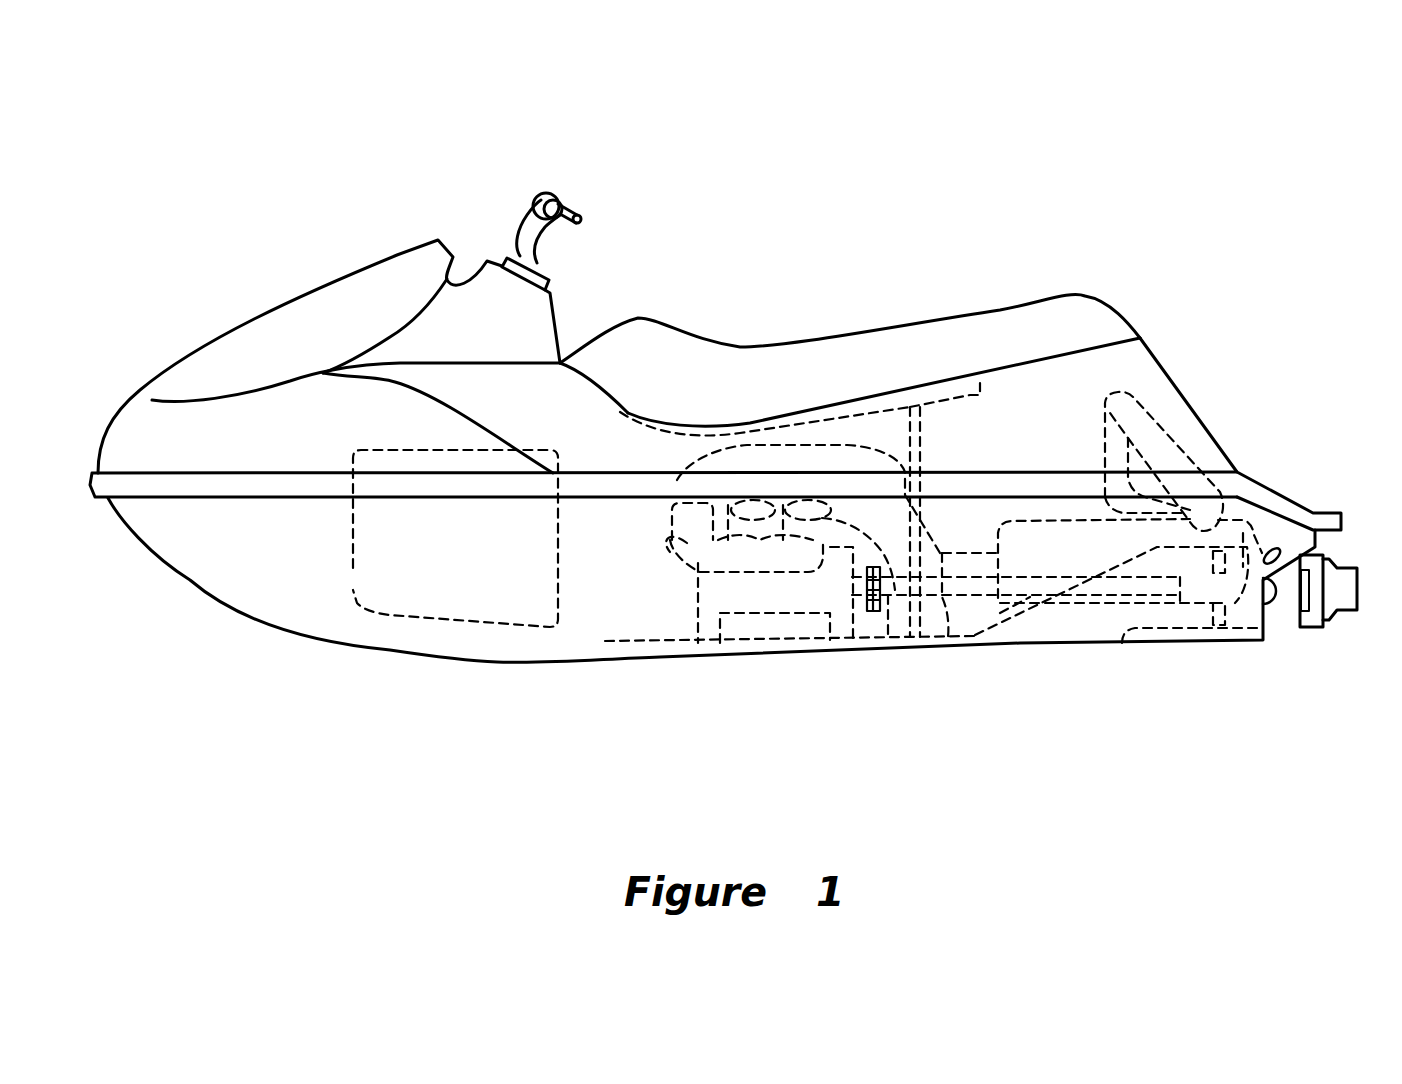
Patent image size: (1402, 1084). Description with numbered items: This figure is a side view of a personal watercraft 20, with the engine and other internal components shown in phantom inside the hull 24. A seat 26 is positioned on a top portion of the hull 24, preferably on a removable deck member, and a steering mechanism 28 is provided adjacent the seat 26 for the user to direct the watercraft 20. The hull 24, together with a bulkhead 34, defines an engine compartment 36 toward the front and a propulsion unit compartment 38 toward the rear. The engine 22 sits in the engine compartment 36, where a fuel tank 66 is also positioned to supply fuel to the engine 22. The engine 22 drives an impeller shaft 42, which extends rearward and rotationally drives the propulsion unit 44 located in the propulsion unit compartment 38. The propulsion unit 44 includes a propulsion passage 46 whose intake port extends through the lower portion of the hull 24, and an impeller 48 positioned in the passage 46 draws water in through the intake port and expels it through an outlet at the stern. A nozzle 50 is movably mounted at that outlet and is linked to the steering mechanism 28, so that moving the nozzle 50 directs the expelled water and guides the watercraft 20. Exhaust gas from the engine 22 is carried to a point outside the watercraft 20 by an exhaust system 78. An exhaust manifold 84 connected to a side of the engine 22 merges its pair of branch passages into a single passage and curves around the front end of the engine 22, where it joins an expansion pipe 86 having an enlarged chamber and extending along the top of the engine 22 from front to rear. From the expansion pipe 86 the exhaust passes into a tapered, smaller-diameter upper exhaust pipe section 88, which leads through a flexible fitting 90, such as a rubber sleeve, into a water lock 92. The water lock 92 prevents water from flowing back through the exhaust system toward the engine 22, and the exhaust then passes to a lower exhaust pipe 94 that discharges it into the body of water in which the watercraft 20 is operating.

The watercraft 20 is at (303, 203).
The engine 22 is at (738, 597).
The hull 24 is at (285, 592).
The seat 26 is at (878, 358).
The steering mechanism 28 is at (577, 200).
The bulkhead 34 is at (923, 460).
The engine compartment 36 is at (590, 600).
The propulsion unit compartment 38 is at (1000, 423).
The impeller shaft 42 is at (888, 595).
The propulsion unit 44 is at (993, 610).
The propulsion passage 46 is at (1118, 620).
The impeller 48 is at (1220, 625).
The nozzle 50 is at (1343, 610).
The fuel tank 66 is at (355, 568).
The exhaust system 78 is at (768, 446).
The exhaust manifold 84 is at (687, 543).
The expansion pipe 86 is at (703, 457).
The upper exhaust pipe section 88 is at (873, 453).
The flexible fitting 90 is at (950, 603).
The water lock 92 is at (1050, 521).
The lower exhaust pipe 94 is at (1172, 432).